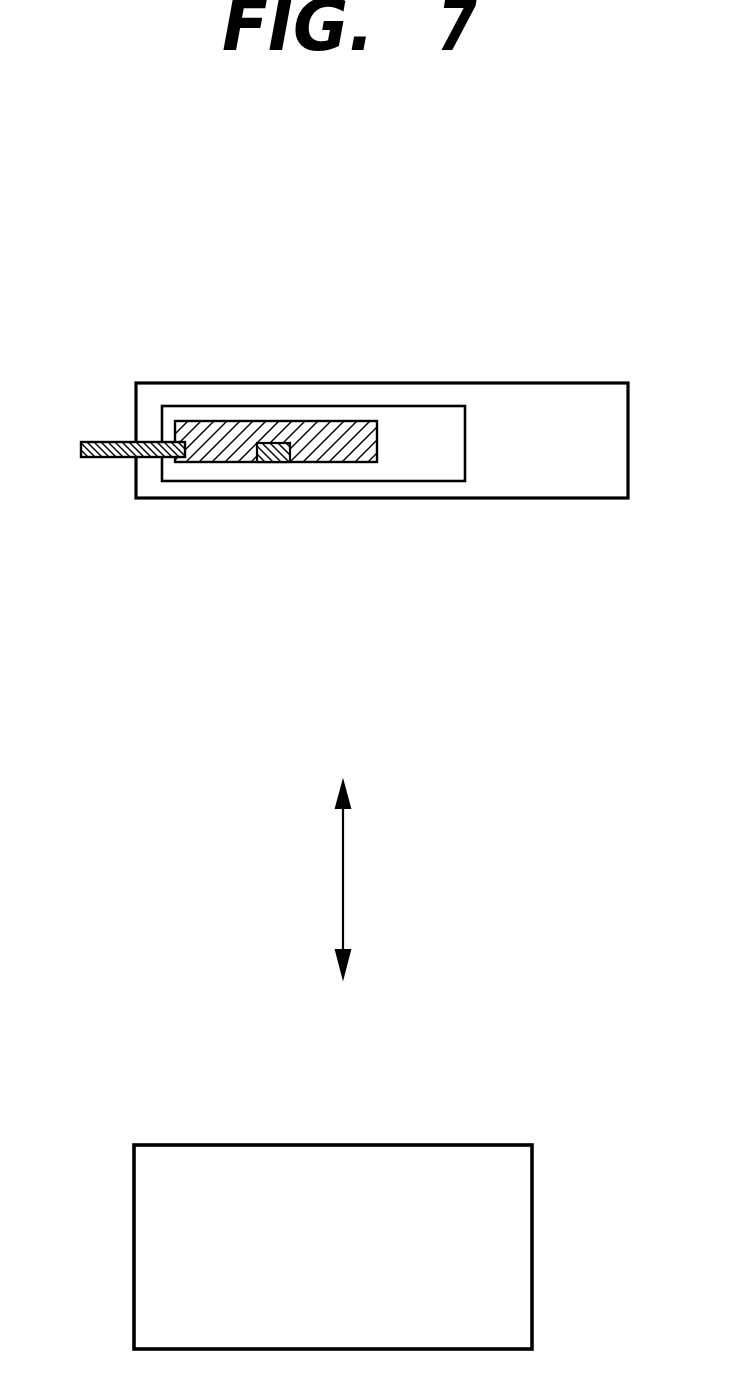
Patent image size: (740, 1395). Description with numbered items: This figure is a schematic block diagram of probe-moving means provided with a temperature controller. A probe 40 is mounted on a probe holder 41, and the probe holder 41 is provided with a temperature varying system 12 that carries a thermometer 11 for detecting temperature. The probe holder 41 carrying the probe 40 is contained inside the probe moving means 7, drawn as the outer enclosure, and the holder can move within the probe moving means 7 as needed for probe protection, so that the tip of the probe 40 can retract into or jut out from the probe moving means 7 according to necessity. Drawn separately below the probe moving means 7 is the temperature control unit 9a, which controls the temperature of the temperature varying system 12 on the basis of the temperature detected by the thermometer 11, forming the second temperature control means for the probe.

The probe moving means 7 is at (562, 393).
The probe holder 41 is at (432, 460).
The temperature varying system 12 is at (225, 421).
The thermometer 11 is at (272, 463).
The probe 40 is at (98, 441).
The temperature control unit 9a is at (515, 1233).